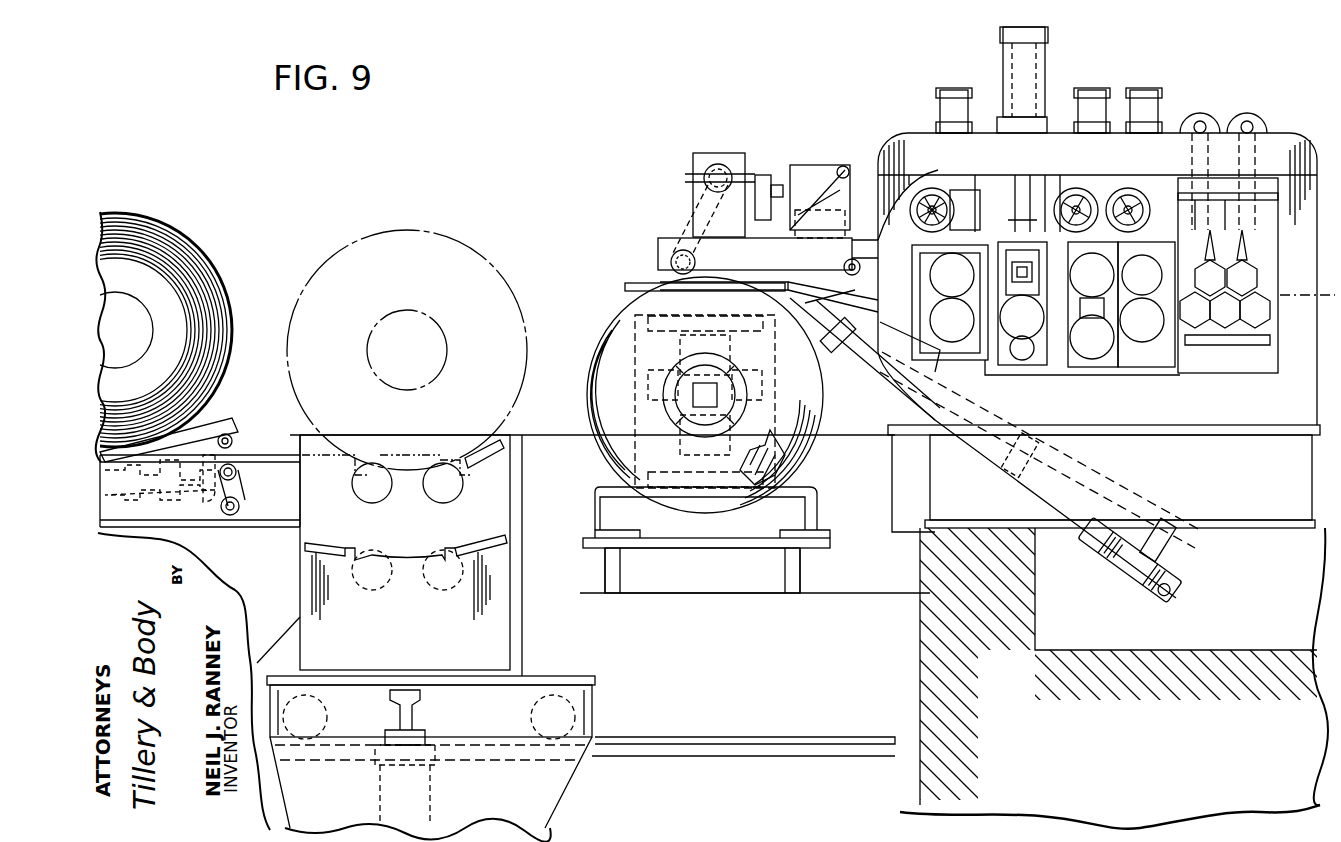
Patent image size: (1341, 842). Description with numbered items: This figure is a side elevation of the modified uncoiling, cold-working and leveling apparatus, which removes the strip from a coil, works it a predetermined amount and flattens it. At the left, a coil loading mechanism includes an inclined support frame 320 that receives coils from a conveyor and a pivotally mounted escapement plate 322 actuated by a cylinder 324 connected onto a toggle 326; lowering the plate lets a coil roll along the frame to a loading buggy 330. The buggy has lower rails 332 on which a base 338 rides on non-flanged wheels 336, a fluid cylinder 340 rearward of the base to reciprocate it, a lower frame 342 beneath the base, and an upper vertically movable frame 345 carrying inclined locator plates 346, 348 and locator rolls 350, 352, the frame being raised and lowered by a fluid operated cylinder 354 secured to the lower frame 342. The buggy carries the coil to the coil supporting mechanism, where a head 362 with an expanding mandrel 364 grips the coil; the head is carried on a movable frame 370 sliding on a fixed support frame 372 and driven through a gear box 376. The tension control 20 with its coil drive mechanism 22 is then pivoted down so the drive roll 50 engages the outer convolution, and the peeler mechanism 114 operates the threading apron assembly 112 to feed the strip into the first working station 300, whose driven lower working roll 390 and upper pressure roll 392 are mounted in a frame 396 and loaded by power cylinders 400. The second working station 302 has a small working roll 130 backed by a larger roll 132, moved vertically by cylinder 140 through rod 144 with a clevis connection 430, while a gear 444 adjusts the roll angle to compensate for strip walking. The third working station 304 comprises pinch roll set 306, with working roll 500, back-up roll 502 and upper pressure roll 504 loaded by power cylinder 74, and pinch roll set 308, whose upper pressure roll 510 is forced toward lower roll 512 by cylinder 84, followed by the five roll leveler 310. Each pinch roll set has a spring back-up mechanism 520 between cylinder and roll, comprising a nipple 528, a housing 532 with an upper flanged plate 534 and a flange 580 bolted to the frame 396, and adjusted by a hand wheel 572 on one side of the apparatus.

The tension control 20 is at (758, 149).
The coil drive mechanism 22 is at (698, 151).
The drive roll 50 is at (637, 277).
The power cylinder 74 is at (1088, 92).
The cylinder 84 is at (1153, 93).
The threading apron assembly 112 is at (869, 326).
The peeler mechanism 114 is at (878, 375).
The working roll 130 is at (1022, 357).
The back-up roll 132 is at (1020, 340).
The cylinder 140 is at (1047, 65).
The rod 144 is at (1048, 185).
The first working station 300 is at (932, 108).
The second working station 302 is at (1050, 97).
The third working station 304 is at (1120, 77).
The pinch roll set 306 is at (1080, 358).
The pinch roll set 308 is at (1140, 353).
The five roll leveler 310 is at (1285, 117).
The inclined support frame 320 is at (270, 446).
The escapement plate 322 is at (224, 418).
The cylinder 324 is at (150, 517).
The toggle 326 is at (247, 493).
The loading buggy 330 is at (538, 632).
The lower rails 332 is at (621, 729).
The non-flanged wheels 336 is at (583, 704).
The base 338 is at (568, 690).
The fluid cylinder 340 is at (260, 658).
The lower frame 342 is at (547, 794).
The upper vertically movable frame 345 is at (513, 618).
The inclined locator plate 346 is at (335, 537).
The inclined locator plate 348 is at (488, 530).
The locator roll 350 is at (362, 587).
The locator roll 352 is at (443, 587).
The fluid operated cylinder 354 is at (438, 788).
The head 362 is at (660, 415).
The expanding mandrel 364 is at (688, 408).
The movable frame 370 is at (817, 503).
The support frame 372 is at (803, 565).
The gear box 376 is at (805, 452).
The lower working roll 390 is at (955, 337).
The upper pressure roll 392 is at (950, 302).
The frame 396 is at (832, 290).
The power cylinder 400 is at (953, 88).
The clevis connection 430 is at (1019, 191).
The gear 444 is at (1023, 301).
The working roll 500 is at (1085, 340).
The back-up roll 502 is at (1142, 343).
The upper pressure roll 504 is at (1093, 304).
The upper pressure roll 510 is at (1146, 304).
The lower roll 512 is at (1170, 340).
The spring back-up mechanism 520 is at (900, 185).
The nipple 528 is at (975, 174).
The housing 532 is at (975, 196).
The upper flanged plate 534 is at (960, 186).
The hand wheel 572 is at (923, 183).
The flange 580 is at (821, 224).